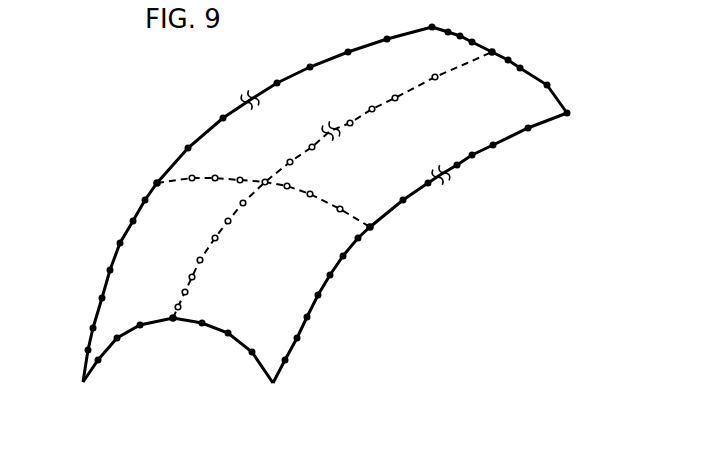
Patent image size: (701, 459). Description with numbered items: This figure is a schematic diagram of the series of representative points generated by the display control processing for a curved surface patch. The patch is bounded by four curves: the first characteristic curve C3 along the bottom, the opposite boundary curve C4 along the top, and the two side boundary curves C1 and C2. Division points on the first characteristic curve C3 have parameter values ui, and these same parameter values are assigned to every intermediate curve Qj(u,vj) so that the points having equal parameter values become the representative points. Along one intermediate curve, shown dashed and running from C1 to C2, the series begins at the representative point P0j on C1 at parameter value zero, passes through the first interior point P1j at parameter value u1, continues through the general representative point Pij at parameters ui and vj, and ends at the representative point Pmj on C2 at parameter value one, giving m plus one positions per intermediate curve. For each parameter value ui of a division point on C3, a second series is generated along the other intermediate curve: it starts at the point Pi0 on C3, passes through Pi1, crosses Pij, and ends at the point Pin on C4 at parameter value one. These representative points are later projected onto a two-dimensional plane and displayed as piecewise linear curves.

The boundary curve C1 is at (121, 242).
The boundary curve C2 is at (353, 243).
The first characteristic curve C3 is at (155, 325).
The boundary curve C4 is at (535, 72).
The representative point P0j is at (157, 183).
The representative point P1j is at (188, 182).
The representative point Pij is at (268, 182).
The representative point Pmj is at (372, 228).
The representative point Pin is at (494, 51).
The representative point Pi1 is at (180, 305).
The representative point Pi0 is at (175, 320).